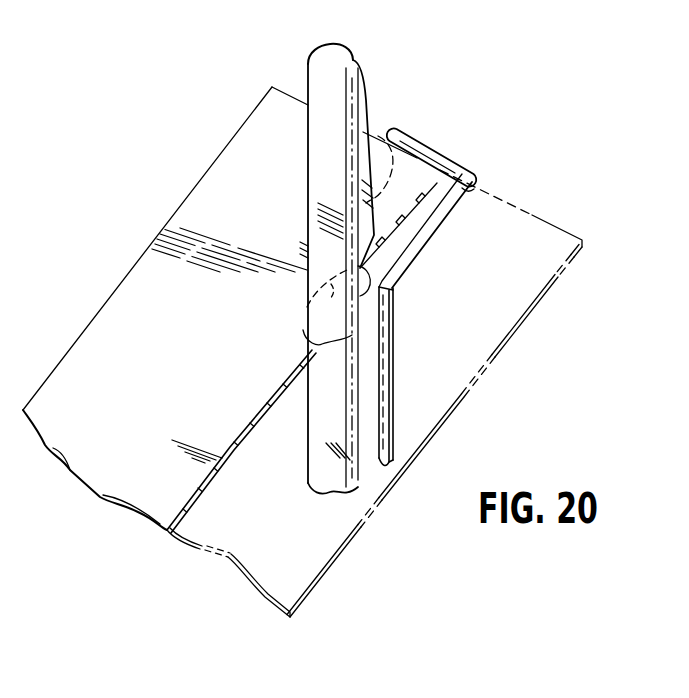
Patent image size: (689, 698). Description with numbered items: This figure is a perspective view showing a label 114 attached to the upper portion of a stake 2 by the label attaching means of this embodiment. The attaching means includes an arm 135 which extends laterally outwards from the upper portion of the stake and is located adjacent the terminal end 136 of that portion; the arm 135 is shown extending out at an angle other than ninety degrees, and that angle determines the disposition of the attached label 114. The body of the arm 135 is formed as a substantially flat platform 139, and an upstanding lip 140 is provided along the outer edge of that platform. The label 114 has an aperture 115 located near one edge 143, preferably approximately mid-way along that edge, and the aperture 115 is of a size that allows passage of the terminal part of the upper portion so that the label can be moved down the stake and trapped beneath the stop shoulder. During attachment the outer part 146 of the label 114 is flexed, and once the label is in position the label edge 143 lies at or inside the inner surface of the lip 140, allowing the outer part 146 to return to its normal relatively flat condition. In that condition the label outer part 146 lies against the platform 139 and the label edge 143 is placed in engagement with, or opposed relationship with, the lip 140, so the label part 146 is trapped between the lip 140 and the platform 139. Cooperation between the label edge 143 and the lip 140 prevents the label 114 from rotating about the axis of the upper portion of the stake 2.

The post 2 is at (394, 363).
The label 114 is at (145, 321).
The aperture 115 is at (305, 307).
The arm 135 is at (465, 160).
The terminal end 136 is at (330, 43).
The platform 139 is at (468, 190).
The lip 140 is at (435, 142).
The edge 143 is at (376, 133).
The outer part 146 is at (264, 135).